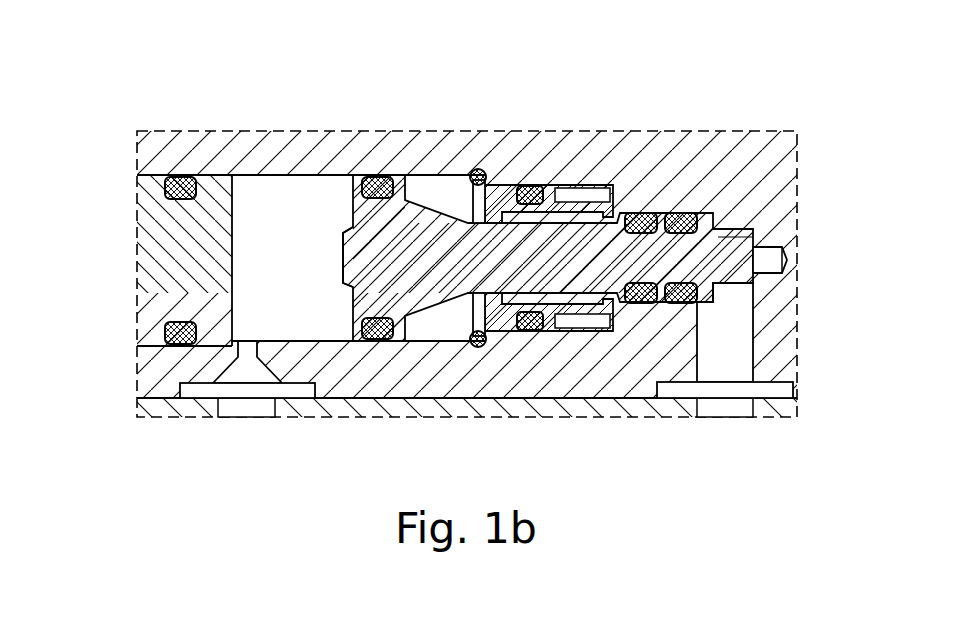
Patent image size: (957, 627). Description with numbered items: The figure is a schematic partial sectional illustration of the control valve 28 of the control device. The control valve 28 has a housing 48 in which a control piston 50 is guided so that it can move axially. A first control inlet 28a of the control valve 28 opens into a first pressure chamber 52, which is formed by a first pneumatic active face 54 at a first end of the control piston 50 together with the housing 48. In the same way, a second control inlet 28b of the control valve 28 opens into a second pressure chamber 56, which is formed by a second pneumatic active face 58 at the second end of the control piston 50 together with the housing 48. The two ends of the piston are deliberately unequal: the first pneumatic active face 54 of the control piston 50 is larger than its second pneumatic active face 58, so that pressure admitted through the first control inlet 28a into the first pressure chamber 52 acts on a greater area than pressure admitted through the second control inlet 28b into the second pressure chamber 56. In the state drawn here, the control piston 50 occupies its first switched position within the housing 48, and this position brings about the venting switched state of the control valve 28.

The control valve 28 is at (132, 114).
The first control inlet 28a is at (248, 400).
The second control inlet 28b is at (723, 400).
The housing 48 is at (688, 160).
The control piston 50 is at (543, 245).
The first pressure chamber 52 is at (300, 195).
The first pneumatic active face 54 is at (343, 248).
The second pressure chamber 56 is at (741, 289).
The second pneumatic active face 58 is at (778, 200).